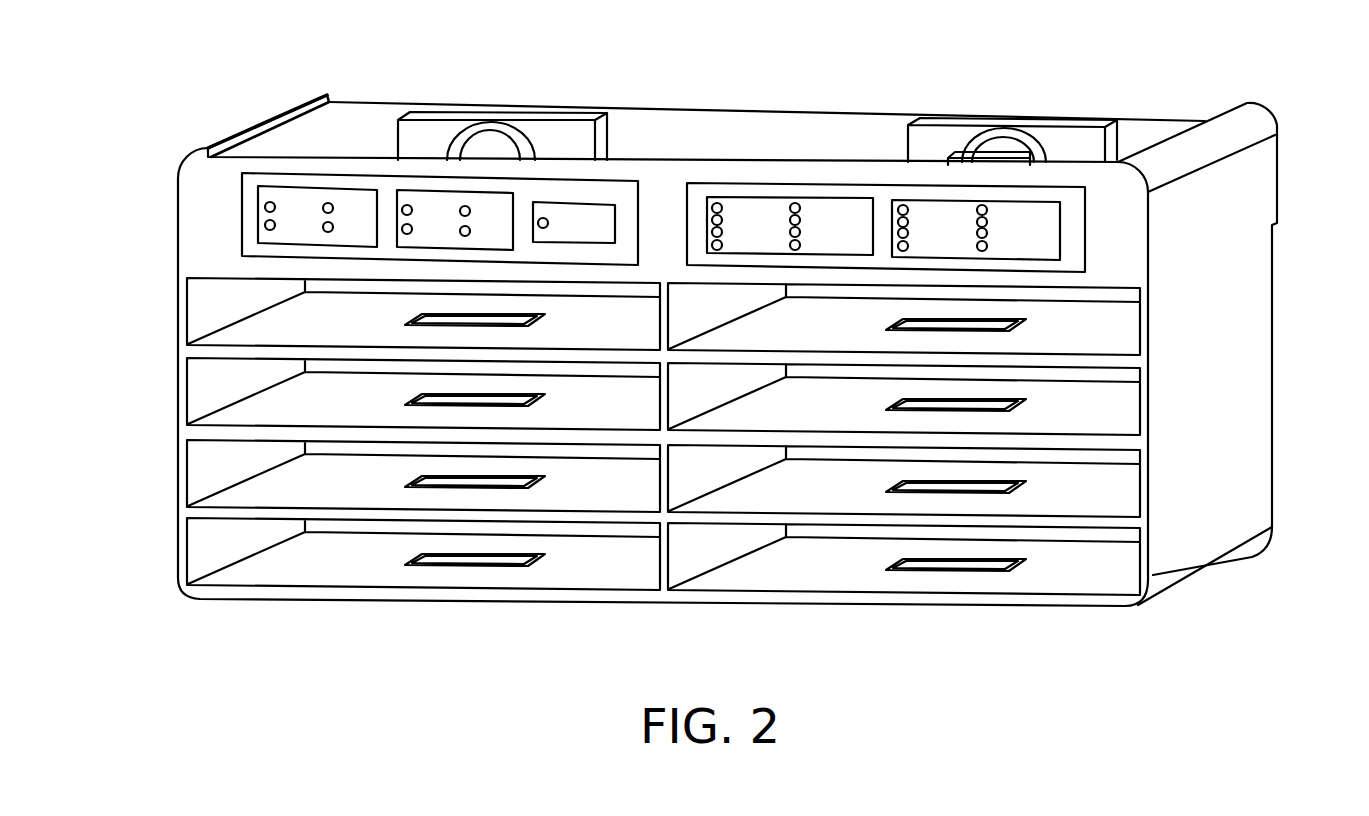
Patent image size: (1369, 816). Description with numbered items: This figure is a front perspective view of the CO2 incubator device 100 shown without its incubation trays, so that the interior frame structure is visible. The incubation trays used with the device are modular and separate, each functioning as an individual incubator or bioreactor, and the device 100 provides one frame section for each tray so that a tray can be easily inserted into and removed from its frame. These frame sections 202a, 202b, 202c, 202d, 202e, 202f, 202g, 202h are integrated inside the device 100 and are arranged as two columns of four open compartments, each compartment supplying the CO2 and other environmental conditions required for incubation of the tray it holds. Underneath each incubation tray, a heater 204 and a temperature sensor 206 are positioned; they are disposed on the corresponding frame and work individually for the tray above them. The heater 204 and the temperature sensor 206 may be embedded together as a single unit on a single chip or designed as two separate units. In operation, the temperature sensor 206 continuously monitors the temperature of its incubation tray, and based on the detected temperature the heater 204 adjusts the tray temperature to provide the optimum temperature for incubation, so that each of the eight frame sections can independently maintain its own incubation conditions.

The CO2 incubator device 100 is at (701, 329).
The frame section 202a is at (359, 320).
The frame section 202b is at (222, 387).
The frame section 202c is at (205, 464).
The frame section 202d is at (215, 547).
The frame section 202e is at (1097, 318).
The frame section 202f is at (1110, 406).
The frame section 202g is at (1100, 484).
The frame section 202h is at (1095, 567).
The heater 204 is at (405, 323).
The temperature sensor 206 is at (532, 324).